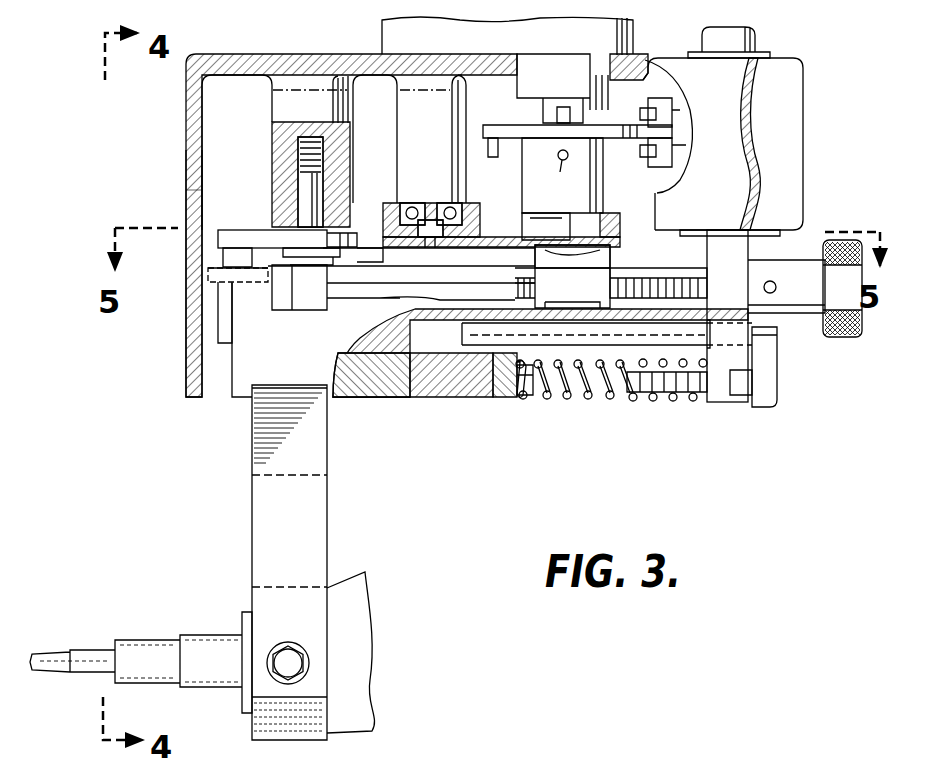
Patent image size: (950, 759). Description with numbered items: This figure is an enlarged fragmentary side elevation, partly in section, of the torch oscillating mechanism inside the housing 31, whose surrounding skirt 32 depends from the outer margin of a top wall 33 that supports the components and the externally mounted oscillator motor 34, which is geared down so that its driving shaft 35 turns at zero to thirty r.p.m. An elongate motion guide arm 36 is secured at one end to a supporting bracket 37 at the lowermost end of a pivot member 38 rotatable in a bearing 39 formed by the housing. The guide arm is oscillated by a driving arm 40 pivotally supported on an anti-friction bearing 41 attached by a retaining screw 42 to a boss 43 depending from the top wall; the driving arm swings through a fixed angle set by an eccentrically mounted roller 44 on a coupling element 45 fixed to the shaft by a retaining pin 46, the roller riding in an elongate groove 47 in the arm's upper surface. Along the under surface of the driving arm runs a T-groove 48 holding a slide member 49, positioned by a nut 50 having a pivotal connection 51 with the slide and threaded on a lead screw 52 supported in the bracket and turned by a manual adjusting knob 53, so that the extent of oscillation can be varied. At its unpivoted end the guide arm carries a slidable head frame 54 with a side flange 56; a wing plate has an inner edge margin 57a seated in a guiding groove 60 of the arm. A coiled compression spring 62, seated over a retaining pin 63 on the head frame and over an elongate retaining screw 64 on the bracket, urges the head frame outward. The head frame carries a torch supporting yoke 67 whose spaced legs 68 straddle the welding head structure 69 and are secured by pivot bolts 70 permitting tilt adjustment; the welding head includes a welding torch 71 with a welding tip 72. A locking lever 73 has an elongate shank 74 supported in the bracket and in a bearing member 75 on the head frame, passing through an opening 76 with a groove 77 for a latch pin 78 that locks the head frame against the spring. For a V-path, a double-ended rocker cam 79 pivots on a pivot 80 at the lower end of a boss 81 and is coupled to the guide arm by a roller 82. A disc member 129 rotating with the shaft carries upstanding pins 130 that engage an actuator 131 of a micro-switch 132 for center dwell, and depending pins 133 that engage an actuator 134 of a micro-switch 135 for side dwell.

The housing 31 is at (188, 190).
The surrounding skirt 32 is at (186, 156).
The top wall 33 is at (278, 62).
The oscillator motor 34 is at (383, 37).
The driving shaft 35 is at (550, 108).
The motion guide arm 36 is at (699, 262).
The supporting bracket 37 is at (752, 271).
The pivot member 38 is at (760, 45).
The bearing 39 is at (725, 198).
The driving arm 40 is at (492, 240).
The anti-friction bearing 41 is at (410, 207).
The retaining screw 42 is at (430, 238).
The boss 43 is at (413, 110).
The eccentrically mounted roller 44 is at (535, 221).
The coupling element 45 is at (598, 197).
The retaining pin 46 is at (555, 172).
The elongate groove 47 is at (594, 248).
The T-groove 48 is at (385, 248).
The slide member 49 is at (575, 262).
The nut 50 is at (600, 285).
The pivotal connection 51 is at (572, 276).
The lead screw 52 is at (653, 277).
The manual adjusting knob 53 is at (852, 333).
The head frame 54 is at (408, 401).
The side flange 56 is at (263, 340).
The inner edge margin 57a is at (475, 752).
The guiding groove 60 is at (537, 751).
The coiled compression spring 62 is at (712, 391).
The retaining pin 63 is at (538, 389).
The elongate retaining screw 64 is at (665, 391).
The torch supporting yoke 67 is at (250, 456).
The spaced legs 68 is at (292, 538).
The welding head structure 69 is at (346, 575).
The pivot bolts 70 is at (290, 655).
The welding torch 71 is at (163, 687).
The welding tip 72 is at (60, 652).
The locking lever 73 is at (770, 381).
The elongate shank 74 is at (618, 337).
The bearing member 75 is at (510, 397).
The opening 76 is at (470, 346).
The groove 77 is at (497, 369).
The latch pin 78 is at (560, 389).
The rocker cam 79 is at (225, 228).
The pivot 80 is at (305, 226).
The boss 81 is at (275, 143).
The roller 82 is at (212, 278).
The disc member 129 is at (510, 133).
The upstanding pins 130 is at (568, 107).
The actuator 131 is at (640, 119).
The micro-switch 132 is at (676, 111).
The depending pins 133 is at (500, 152).
The actuator 134 is at (634, 147).
The micro-switch 135 is at (682, 143).